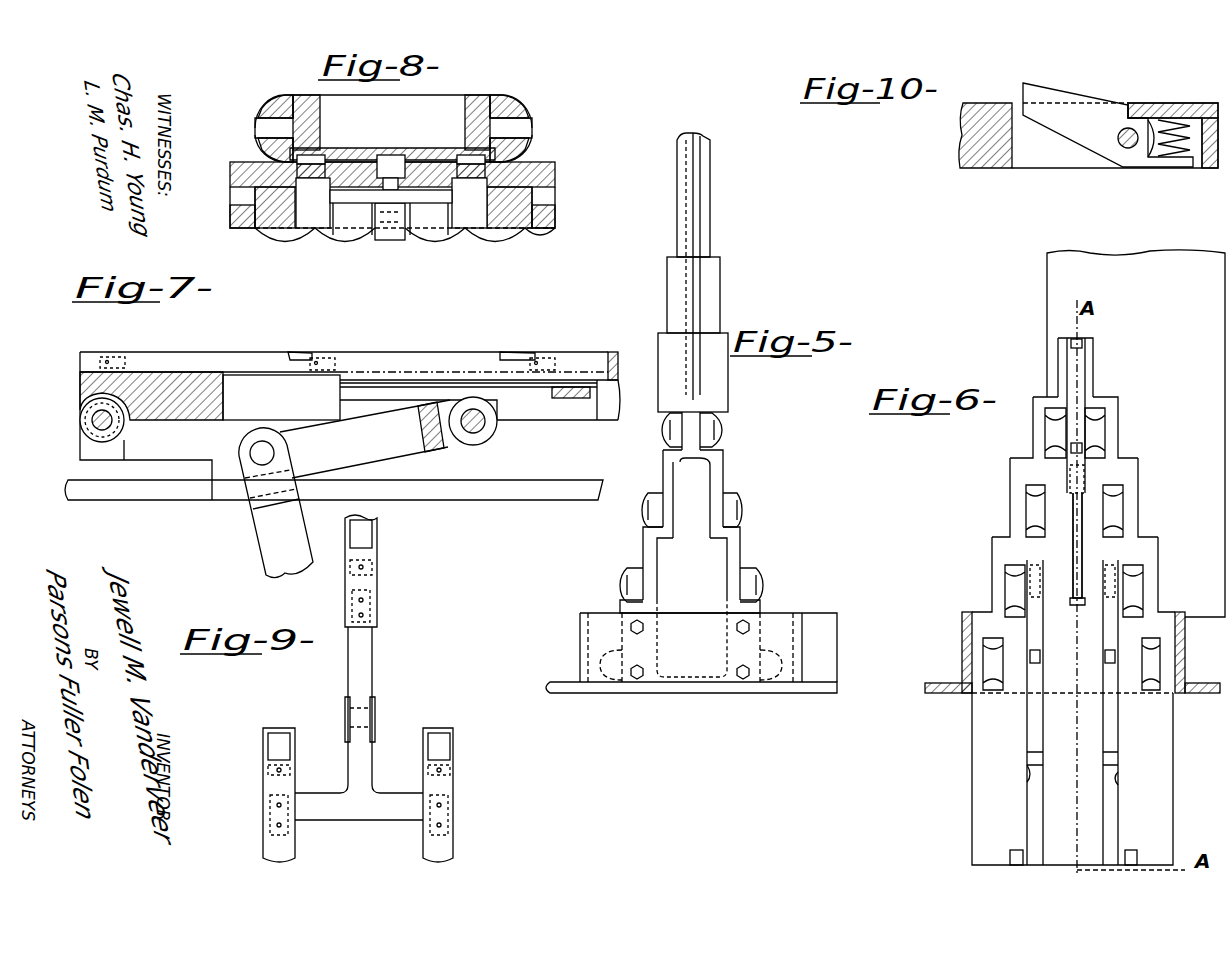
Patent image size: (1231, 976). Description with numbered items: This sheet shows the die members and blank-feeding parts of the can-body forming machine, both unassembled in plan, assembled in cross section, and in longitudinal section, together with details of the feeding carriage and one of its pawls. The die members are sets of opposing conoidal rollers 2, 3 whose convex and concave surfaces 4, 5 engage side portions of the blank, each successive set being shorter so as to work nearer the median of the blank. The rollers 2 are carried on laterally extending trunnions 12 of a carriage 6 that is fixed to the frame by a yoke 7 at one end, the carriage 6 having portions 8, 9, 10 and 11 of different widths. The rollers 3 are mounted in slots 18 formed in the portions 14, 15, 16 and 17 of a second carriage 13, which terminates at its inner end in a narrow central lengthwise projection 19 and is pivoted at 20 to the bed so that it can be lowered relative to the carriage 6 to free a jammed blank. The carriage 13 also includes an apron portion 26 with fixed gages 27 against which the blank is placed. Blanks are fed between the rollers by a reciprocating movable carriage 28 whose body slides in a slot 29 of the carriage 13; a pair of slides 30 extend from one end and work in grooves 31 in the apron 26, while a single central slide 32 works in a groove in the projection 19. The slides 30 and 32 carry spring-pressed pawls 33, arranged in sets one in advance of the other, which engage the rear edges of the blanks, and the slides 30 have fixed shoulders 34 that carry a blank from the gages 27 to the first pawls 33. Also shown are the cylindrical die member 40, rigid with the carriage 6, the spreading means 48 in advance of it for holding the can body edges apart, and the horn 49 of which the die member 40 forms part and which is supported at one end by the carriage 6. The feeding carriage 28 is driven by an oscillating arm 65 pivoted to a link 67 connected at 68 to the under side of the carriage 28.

In FIG. 8, the roller 2 is at (508, 100).
In FIG. 5, the roller 2 is at (722, 425).
In FIG. 8, the roller 3 is at (483, 230).
In FIG. 6, the roller 3 is at (1098, 425).
In FIG. 8, the convex surface 4 is at (263, 105).
In FIG. 5, the convex surface 4 is at (712, 433).
In FIG. 8, the concave surface 5 is at (275, 238).
In FIG. 6, the concave surface 5 is at (1097, 437).
In FIG. 8, the carriage 6 is at (308, 97).
In FIG. 5, the carriage 6 is at (727, 594).
In FIG. 5, the yoke 7 is at (690, 694).
In FIG. 6, the yoke 7 is at (962, 668).
In FIG. 5, the portion of carriage 8 is at (622, 607).
In FIG. 5, the portion of carriage 9 is at (645, 555).
In FIG. 5, the portion of carriage 10 is at (663, 455).
In FIG. 5, the portion of carriage 11 is at (680, 431).
In FIG. 8, the trunnion 12 is at (262, 128).
In FIG. 7, the carriage 13 is at (168, 410).
In FIG. 6, the carriage 13 is at (983, 770).
In FIG. 6, the portion of carriage 14 is at (972, 711).
In FIG. 6, the portion of carriage 15 is at (992, 566).
In FIG. 6, the portion of carriage 16 is at (1015, 500).
In FIG. 6, the portion of carriage 17 is at (1043, 434).
In FIG. 6, the slot 18 is at (1027, 512).
In FIG. 7, the central lengthwise projection 19 is at (80, 382).
In FIG. 6, the central lengthwise projection 19 is at (1058, 352).
In FIG. 7, the pivot 20 is at (92, 421).
In FIG. 6, the apron portion 26 is at (978, 812).
In FIG. 6, the fixed gage 27 is at (1010, 857).
In FIG. 8, the movable carriage 28 is at (425, 205).
In FIG. 7, the movable carriage 28 is at (340, 392).
In FIG. 9, the movable carriage 28 is at (372, 760).
In FIG. 10, the movable carriage 28 is at (965, 130).
In FIG. 7, the slot 29 is at (422, 378).
In FIG. 6, the slot 29 is at (1080, 508).
In FIG. 8, the arm or slide 30 is at (312, 175).
In FIG. 9, the arm or slide 30 is at (270, 781).
In FIG. 6, the arm or slide 30 is at (1030, 720).
In FIG. 6, the groove 31 is at (1027, 775).
In FIG. 8, the slide or guide 32 is at (385, 165).
In FIG. 7, the slide or guide 32 is at (175, 360).
In FIG. 9, the slide or guide 32 is at (375, 580).
In FIG. 6, the slide or guide 32 is at (1086, 372).
In FIG. 10, the slide or guide 32 is at (975, 168).
In FIG. 8, the pawl 33 is at (318, 156).
In FIG. 7, the pawl 33 is at (88, 353).
In FIG. 9, the pawl 33 is at (370, 533).
In FIG. 6, the pawl 33 is at (1083, 343).
In FIG. 10, the pawl 33 is at (1058, 97).
In FIG. 6, the fixed shoulder 34 is at (1103, 760).
In FIG. 5, the die member 40 is at (721, 275).
In FIG. 5, the spreading means 48 is at (665, 348).
In FIG. 5, the horn 49 is at (712, 225).
In FIG. 7, the oscillating arm 65 is at (278, 547).
In FIG. 7, the link 67 is at (410, 438).
In FIG. 7, the connection 68 is at (478, 428).